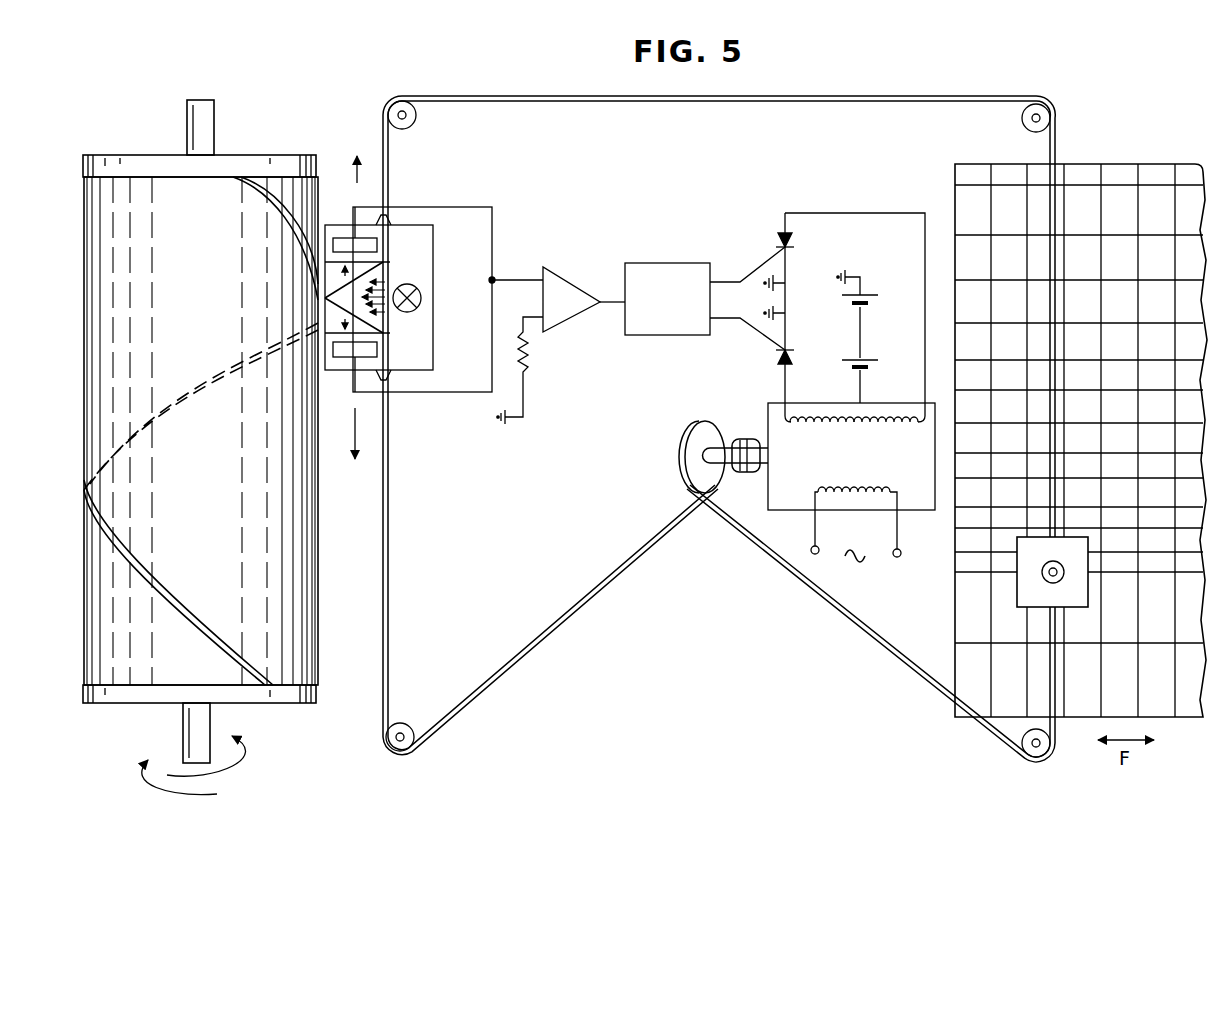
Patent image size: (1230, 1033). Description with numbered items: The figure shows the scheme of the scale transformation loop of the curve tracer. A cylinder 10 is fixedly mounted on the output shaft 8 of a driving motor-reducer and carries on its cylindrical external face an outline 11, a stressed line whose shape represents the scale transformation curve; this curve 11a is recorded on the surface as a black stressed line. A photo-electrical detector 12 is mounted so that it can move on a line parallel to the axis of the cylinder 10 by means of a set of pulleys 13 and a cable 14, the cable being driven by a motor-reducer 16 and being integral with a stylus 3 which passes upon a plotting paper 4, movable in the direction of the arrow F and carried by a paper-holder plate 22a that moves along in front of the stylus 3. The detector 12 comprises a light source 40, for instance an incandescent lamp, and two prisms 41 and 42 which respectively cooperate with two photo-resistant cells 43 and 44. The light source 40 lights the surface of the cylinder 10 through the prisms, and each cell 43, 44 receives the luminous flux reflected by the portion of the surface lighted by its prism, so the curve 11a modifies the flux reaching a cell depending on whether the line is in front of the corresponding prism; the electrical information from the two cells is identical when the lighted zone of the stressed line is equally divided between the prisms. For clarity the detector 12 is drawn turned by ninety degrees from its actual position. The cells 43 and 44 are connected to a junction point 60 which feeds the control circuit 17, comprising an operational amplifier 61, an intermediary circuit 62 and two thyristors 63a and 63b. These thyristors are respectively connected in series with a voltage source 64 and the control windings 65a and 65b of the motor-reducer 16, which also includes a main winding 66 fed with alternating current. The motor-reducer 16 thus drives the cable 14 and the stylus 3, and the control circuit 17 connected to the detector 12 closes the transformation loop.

The stylus 3 is at (1028, 590).
The plotting paper 4 is at (1093, 696).
The output shaft 8 is at (207, 117).
The cylinder 10 is at (292, 698).
The outline 11 is at (297, 547).
The curve 11a is at (200, 625).
The photo-electrical detector 12 is at (438, 352).
The set of pulleys 13 is at (412, 122).
The cable 14 is at (385, 517).
The motor-reducer 16 is at (807, 482).
The control circuit 17 is at (645, 257).
The paper-holder plate 22a is at (1119, 161).
The light source 40 is at (421, 298).
The prism 41 is at (375, 272).
The prism 42 is at (378, 325).
The photo-resistant cell 43 is at (377, 244).
The photo-resistant cell 44 is at (377, 349).
The junction point 60 is at (494, 279).
The operational amplifier 61 is at (567, 283).
The intermediary circuit 62 is at (695, 266).
The thyristor 63a is at (795, 353).
The thyristor 63b is at (795, 245).
The voltage source 64 is at (862, 345).
The control winding 65a is at (828, 425).
The control winding 65b is at (884, 425).
The main winding 66 is at (873, 488).